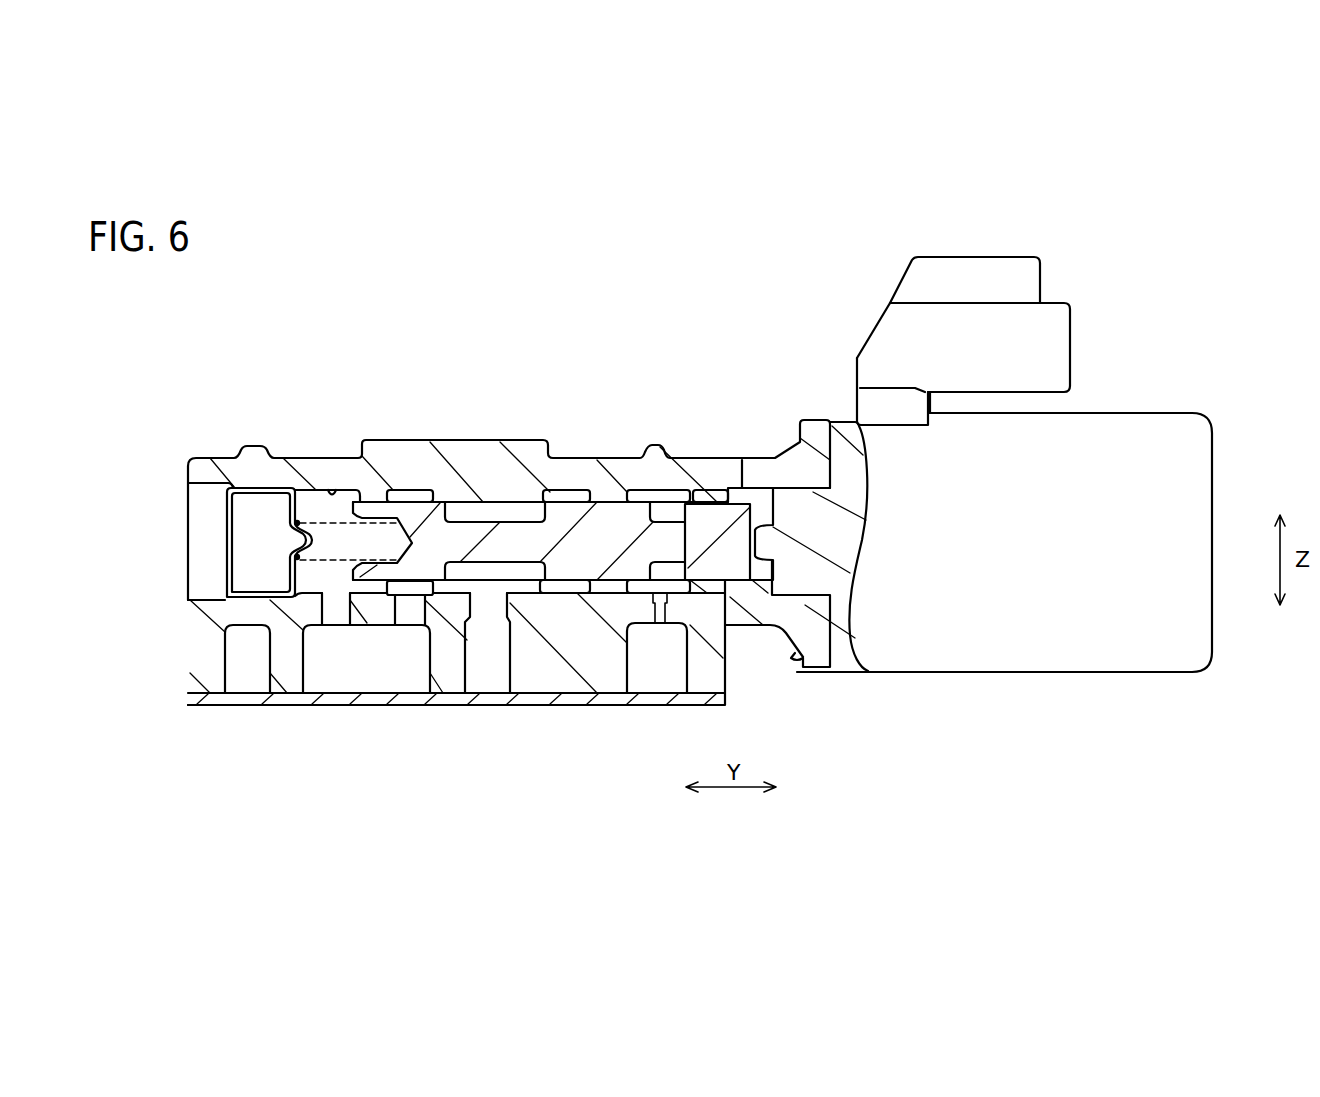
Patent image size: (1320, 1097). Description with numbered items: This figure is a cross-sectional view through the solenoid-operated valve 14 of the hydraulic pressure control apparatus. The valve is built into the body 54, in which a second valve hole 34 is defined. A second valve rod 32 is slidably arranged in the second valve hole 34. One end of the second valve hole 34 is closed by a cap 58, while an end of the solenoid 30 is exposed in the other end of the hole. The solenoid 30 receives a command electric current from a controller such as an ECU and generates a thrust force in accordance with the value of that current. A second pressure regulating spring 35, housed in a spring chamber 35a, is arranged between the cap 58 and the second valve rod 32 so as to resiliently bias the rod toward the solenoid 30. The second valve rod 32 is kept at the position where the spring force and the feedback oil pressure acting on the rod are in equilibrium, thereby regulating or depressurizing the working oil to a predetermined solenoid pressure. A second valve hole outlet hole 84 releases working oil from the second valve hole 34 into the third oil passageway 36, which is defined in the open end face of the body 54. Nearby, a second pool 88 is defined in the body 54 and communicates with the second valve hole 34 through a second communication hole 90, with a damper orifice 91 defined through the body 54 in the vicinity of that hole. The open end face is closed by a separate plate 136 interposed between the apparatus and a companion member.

The solenoid-operated valve 14 is at (380, 316).
The solenoid 30 is at (1183, 468).
The second valve rod 32 is at (704, 514).
The second valve hole 34 is at (475, 502).
The second pressure regulating spring 35 is at (305, 521).
The spring chamber 35a is at (333, 490).
The third oil passageway 36 is at (508, 667).
The body 54 is at (410, 458).
The cap 58 is at (247, 512).
The second valve hole outlet hole 84 is at (470, 598).
The second pool 88 is at (336, 693).
The second communication hole 90 is at (425, 607).
The damper orifice 91 is at (323, 610).
The separate plate 136 is at (208, 703).